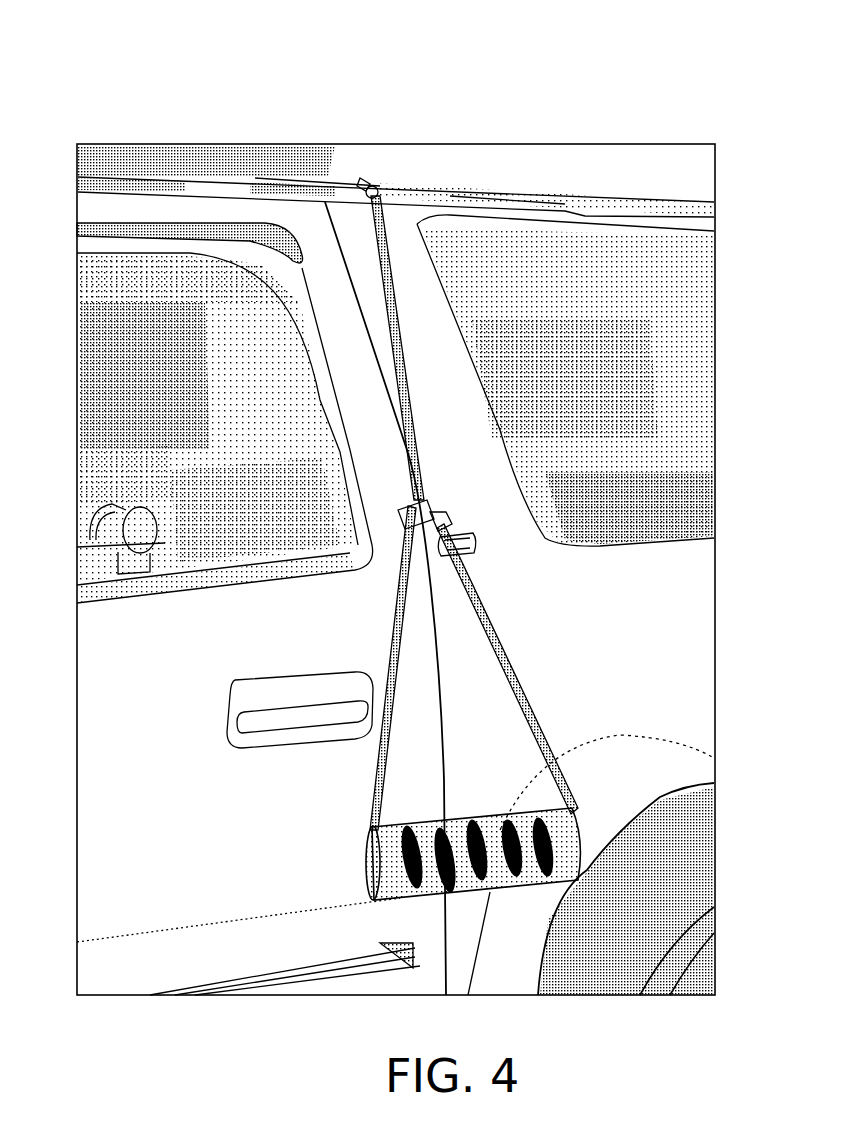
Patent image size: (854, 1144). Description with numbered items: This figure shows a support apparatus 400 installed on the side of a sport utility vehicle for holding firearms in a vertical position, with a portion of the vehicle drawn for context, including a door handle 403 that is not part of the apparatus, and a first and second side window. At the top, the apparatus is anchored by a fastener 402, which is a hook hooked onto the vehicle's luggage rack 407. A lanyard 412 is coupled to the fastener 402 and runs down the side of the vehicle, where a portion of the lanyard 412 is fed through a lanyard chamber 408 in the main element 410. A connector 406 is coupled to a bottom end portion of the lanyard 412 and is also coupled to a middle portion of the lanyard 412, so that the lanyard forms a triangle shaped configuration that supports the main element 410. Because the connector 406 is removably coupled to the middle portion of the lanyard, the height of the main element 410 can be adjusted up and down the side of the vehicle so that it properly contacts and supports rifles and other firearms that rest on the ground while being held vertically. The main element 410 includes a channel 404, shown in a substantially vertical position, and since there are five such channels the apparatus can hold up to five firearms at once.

The support apparatus 400 is at (431, 482).
The fastener 402 is at (361, 180).
The door handle 403 is at (231, 675).
The channel 404 is at (476, 859).
The connector 406 is at (437, 508).
The luggage rack 407 is at (520, 184).
The lanyard chamber 408 is at (364, 856).
The main element 410 is at (512, 896).
The lanyard 412 is at (413, 374).